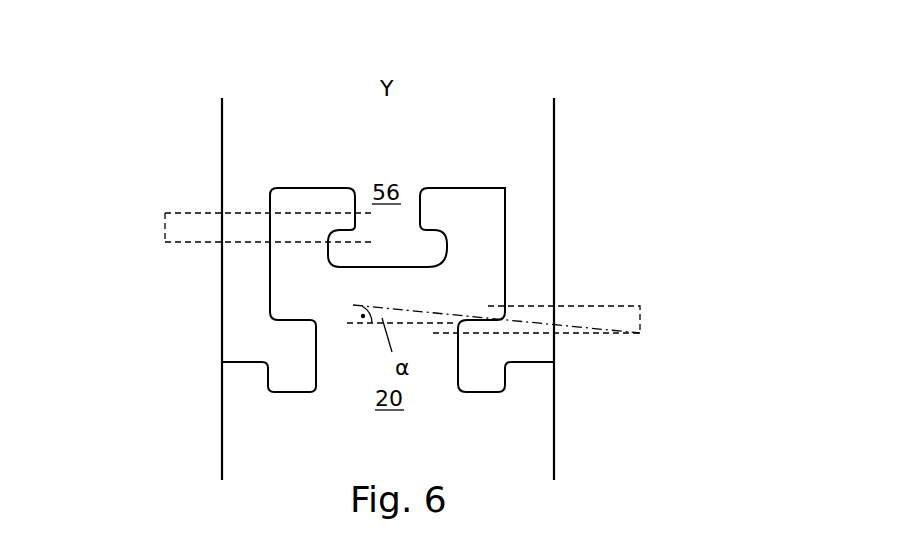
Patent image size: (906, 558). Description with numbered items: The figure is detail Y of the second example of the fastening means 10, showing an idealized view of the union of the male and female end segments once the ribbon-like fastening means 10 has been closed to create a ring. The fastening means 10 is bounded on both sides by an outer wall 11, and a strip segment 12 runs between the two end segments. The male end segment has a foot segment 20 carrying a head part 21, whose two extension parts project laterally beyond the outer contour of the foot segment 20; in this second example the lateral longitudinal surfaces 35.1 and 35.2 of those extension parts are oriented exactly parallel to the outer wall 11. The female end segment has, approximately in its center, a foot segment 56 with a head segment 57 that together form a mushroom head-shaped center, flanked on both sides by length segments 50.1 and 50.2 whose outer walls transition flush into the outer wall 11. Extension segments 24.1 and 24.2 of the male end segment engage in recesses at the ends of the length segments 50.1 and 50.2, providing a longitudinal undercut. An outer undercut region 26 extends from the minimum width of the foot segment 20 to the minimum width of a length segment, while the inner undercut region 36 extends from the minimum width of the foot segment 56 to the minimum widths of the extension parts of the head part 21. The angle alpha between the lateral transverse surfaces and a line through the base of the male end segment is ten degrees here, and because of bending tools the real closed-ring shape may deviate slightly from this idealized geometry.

The fastening means 10 is at (395, 242).
The outer wall 11 is at (190, 262).
The strip segment 12 is at (250, 120).
The foot segment 20 is at (383, 298).
The head part 21 is at (495, 205).
The extension segment 24.1 is at (258, 380).
The extension segment 24.2 is at (537, 378).
The outer undercut region 26 is at (640, 320).
The lateral longitudinal surface 35.1 is at (264, 265).
The lateral longitudinal surface 35.2 is at (512, 240).
The inner undercut region 36 is at (253, 227).
The length segment 50.1 is at (540, 275).
The length segment 50.2 is at (232, 248).
The foot segment 56 is at (398, 245).
The head segment 57 is at (343, 251).